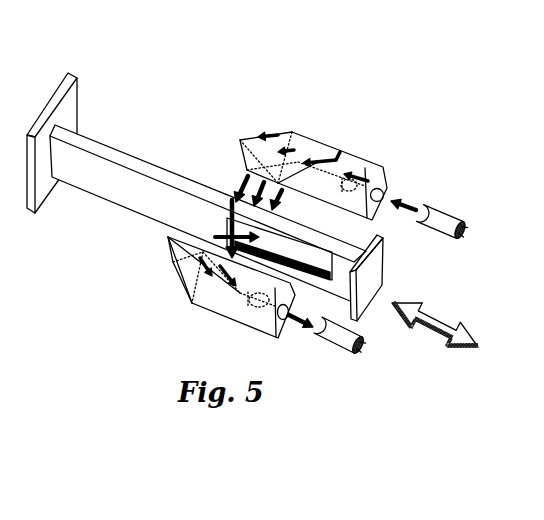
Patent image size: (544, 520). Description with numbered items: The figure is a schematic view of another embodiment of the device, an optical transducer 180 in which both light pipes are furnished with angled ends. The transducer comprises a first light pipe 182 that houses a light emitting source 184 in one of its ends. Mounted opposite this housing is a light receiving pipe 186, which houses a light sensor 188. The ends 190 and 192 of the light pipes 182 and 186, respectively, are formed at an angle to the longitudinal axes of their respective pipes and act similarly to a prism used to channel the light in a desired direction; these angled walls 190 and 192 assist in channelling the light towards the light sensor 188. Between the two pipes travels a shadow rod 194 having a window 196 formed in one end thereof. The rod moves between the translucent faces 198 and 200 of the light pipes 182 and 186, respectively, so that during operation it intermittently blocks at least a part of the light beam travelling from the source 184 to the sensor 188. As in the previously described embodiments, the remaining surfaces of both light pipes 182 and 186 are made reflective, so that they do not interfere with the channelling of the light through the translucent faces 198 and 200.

The optical transducer 180 is at (190, 128).
The first light pipe 182 is at (367, 157).
The light emitting source 184 is at (440, 212).
The light receiving pipe 186 is at (240, 323).
The light sensor 188 is at (337, 350).
The angled end wall of first light pipe 190 is at (291, 132).
The angled end wall of light receiving pipe 192 is at (168, 240).
The shadow rod 194 is at (100, 146).
The window 196 is at (310, 262).
The translucent face of first light pipe 198 is at (252, 158).
The translucent face of light receiving pipe 200 is at (223, 230).